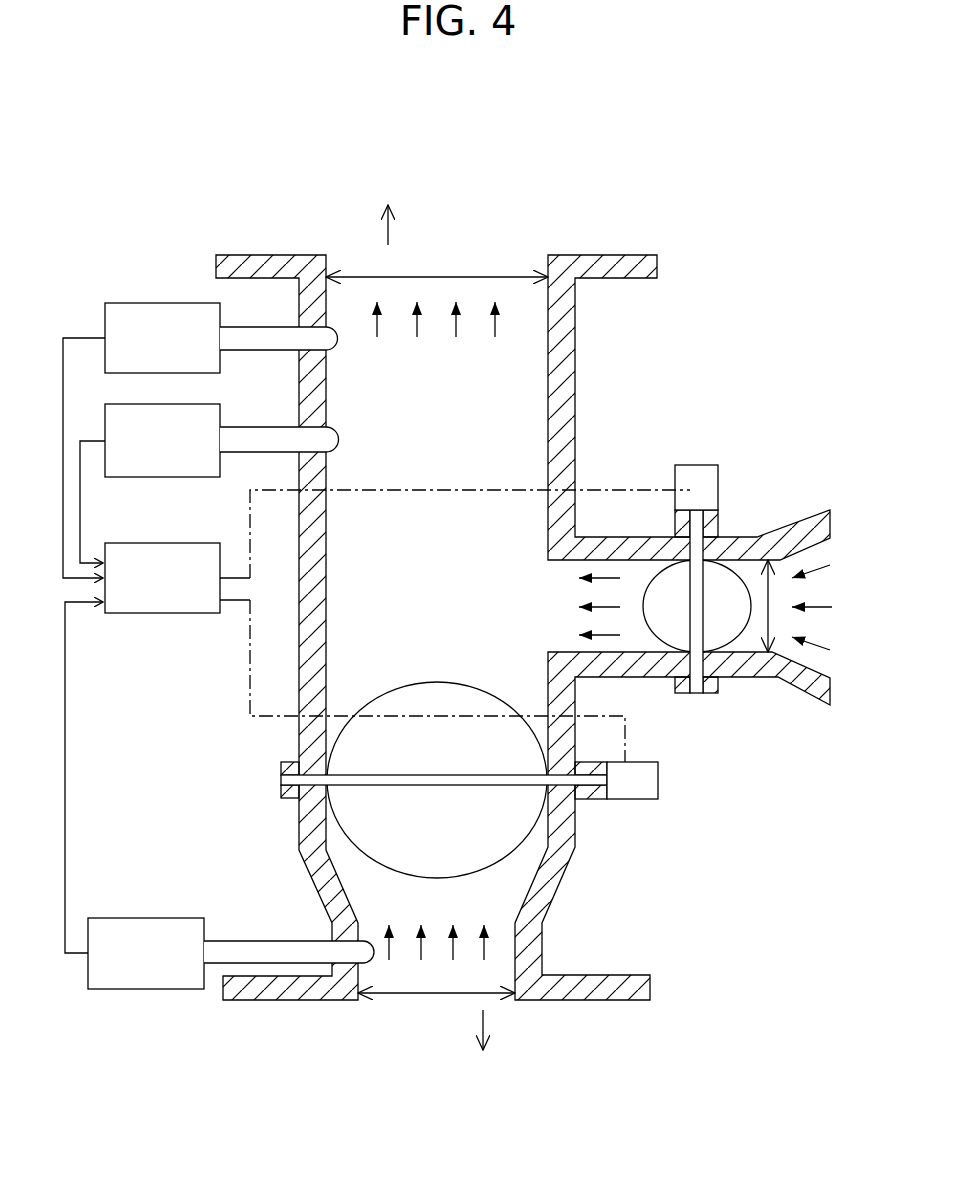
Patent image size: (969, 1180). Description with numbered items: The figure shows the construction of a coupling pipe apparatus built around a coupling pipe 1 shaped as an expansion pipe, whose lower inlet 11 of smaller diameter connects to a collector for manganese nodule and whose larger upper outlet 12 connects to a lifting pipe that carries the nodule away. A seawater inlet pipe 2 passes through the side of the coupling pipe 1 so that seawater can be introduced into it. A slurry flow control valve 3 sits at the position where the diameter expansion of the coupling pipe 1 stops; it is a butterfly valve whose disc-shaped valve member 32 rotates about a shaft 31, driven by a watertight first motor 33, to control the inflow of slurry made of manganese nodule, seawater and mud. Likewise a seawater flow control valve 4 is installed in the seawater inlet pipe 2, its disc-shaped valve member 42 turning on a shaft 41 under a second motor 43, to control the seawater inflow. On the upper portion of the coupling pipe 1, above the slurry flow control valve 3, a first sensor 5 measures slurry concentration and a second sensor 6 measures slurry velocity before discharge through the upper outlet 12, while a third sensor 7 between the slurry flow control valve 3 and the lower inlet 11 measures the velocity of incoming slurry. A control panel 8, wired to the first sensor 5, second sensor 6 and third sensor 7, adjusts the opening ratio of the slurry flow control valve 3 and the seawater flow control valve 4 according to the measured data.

The coupling pipe 1 is at (579, 399).
The seawater inlet pipe 2 is at (737, 682).
The slurry flow control valve 3 is at (519, 796).
The seawater flow control valve 4 is at (698, 557).
The first sensor 5 is at (200, 440).
The second sensor 6 is at (209, 483).
The third sensor 7 is at (219, 795).
The control panel 8 is at (397, 626).
The lower inlet 11 is at (413, 1000).
The upper outlet 12 is at (449, 254).
The shaft 31 is at (575, 797).
The disc-shaped valve member 32 is at (473, 825).
The first motor 33 is at (640, 779).
The shaft 41 is at (697, 540).
The disc-shaped valve member 42 is at (722, 595).
The second motor 43 is at (705, 492).